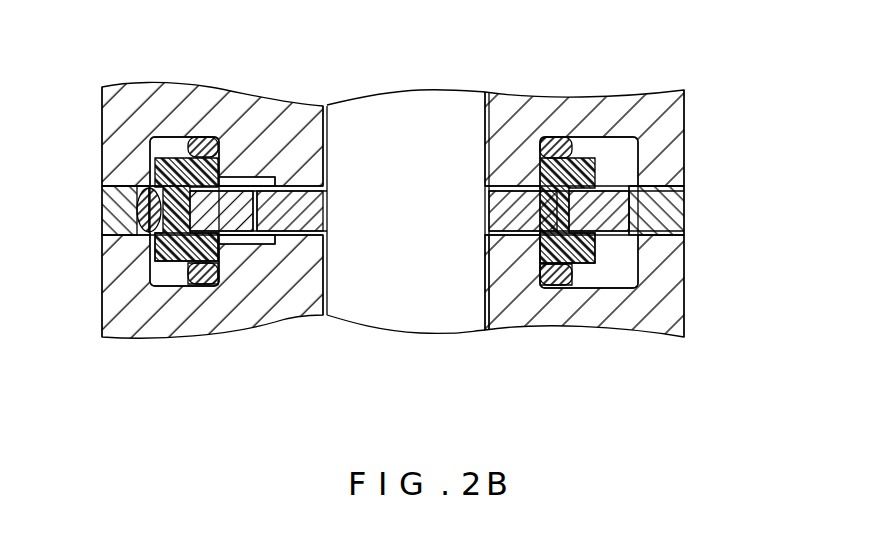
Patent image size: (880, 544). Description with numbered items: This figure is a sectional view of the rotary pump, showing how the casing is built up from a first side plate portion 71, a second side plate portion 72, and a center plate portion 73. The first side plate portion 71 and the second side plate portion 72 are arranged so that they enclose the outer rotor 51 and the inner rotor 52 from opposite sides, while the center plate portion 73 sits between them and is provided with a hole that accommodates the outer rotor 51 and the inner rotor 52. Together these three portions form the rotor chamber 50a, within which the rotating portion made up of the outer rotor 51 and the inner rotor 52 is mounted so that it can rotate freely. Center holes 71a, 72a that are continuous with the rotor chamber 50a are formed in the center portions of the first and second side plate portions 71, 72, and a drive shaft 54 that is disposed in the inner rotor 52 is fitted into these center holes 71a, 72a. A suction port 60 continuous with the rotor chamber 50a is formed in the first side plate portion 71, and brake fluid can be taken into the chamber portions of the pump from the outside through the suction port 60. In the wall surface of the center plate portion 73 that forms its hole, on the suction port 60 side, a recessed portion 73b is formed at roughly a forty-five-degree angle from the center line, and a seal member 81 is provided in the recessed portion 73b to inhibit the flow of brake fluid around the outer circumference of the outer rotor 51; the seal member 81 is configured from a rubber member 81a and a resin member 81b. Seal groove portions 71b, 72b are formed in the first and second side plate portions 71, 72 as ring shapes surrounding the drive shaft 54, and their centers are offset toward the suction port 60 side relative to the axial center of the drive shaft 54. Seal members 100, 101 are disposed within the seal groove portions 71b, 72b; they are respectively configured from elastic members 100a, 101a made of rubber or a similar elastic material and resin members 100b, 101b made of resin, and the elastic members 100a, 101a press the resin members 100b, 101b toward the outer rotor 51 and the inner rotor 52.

The seal member 100 is at (344, 147).
The elastic member 100a is at (370, 165).
The resin member 100b is at (165, 158).
The seal member 101 is at (398, 337).
The elastic member 101a is at (220, 262).
The resin member 101b is at (205, 284).
The seal member 81 is at (198, 300).
The rubber member 81a is at (148, 233).
The resin member 81b is at (160, 235).
The first side plate portion 71 is at (269, 101).
The center hole 71a is at (328, 162).
The seal groove portion 71b is at (150, 140).
The second side plate portion 72 is at (106, 342).
The center hole 72a is at (492, 283).
The seal groove portion 72b is at (152, 286).
The center plate portion 73 is at (102, 217).
The recessed portion 73b is at (135, 178).
The outer rotor 51 is at (232, 222).
The inner rotor 52 is at (330, 228).
The drive shaft 54 is at (451, 316).
The suction port 60 is at (306, 106).
The rotor chamber 50a is at (655, 187).